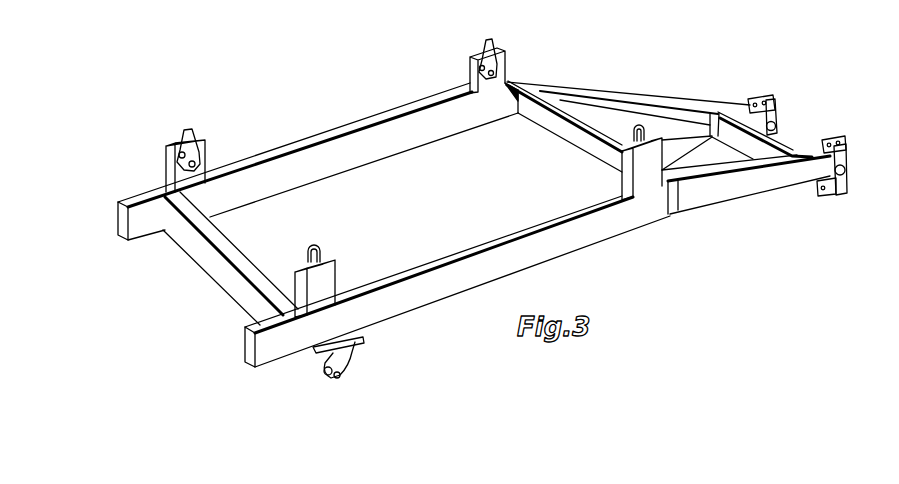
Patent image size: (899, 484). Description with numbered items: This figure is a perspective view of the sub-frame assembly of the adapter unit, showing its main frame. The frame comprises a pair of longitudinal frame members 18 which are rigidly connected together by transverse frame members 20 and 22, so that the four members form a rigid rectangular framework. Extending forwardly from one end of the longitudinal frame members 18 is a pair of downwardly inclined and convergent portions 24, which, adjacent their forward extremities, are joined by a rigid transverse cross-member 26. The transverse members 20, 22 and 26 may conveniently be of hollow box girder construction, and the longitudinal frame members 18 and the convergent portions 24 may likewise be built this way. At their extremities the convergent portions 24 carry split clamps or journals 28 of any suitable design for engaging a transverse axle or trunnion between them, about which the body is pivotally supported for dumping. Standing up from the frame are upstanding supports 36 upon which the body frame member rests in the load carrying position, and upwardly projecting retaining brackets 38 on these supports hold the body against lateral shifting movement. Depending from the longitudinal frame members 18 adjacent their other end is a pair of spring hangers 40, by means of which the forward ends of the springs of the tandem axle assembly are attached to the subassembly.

The longitudinal frame members 18 is at (318, 157).
The transverse frame member 20 is at (213, 257).
The transverse frame member 22 is at (563, 135).
The downwardly inclined and convergent portions 24 is at (635, 107).
The rigid transverse cross-member 26 is at (737, 143).
The split clamps or journals 28 is at (777, 113).
The upstanding supports 36 is at (470, 63).
The retaining brackets 38 is at (190, 135).
The spring hangers 40 is at (362, 340).